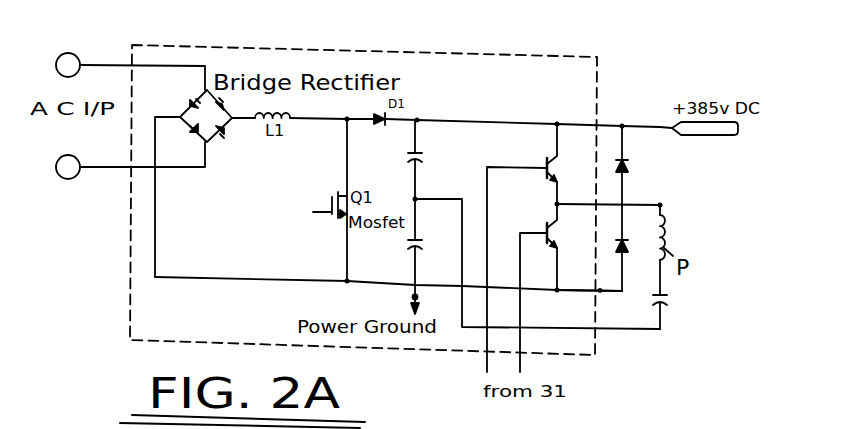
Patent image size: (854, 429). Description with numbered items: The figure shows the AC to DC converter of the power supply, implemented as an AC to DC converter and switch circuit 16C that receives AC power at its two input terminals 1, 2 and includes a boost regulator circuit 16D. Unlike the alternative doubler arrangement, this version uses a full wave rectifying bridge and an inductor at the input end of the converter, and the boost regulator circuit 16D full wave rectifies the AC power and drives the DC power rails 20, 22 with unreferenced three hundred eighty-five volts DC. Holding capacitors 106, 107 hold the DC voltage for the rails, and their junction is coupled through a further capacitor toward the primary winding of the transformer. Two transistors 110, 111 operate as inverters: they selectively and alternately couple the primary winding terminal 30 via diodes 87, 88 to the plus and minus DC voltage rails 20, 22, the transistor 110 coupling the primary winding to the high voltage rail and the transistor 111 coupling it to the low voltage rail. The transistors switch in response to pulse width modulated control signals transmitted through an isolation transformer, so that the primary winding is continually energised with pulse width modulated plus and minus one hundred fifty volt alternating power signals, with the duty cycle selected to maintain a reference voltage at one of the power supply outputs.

The AC input terminal 1 is at (130, 71).
The AC input terminal 2 is at (130, 160).
The AC to DC converter and switch circuit 16C is at (247, 42).
The boost regulator circuit 16D is at (226, 283).
The DC power rail 20 is at (641, 127).
The DC power rail 22 is at (603, 292).
The primary winding terminal 30 is at (662, 205).
The diode 87 is at (635, 165).
The diode 88 is at (635, 248).
The holding capacitor 106 is at (434, 159).
The holding capacitor 107 is at (432, 242).
The transistor 110 is at (570, 164).
The transistor 111 is at (567, 247).